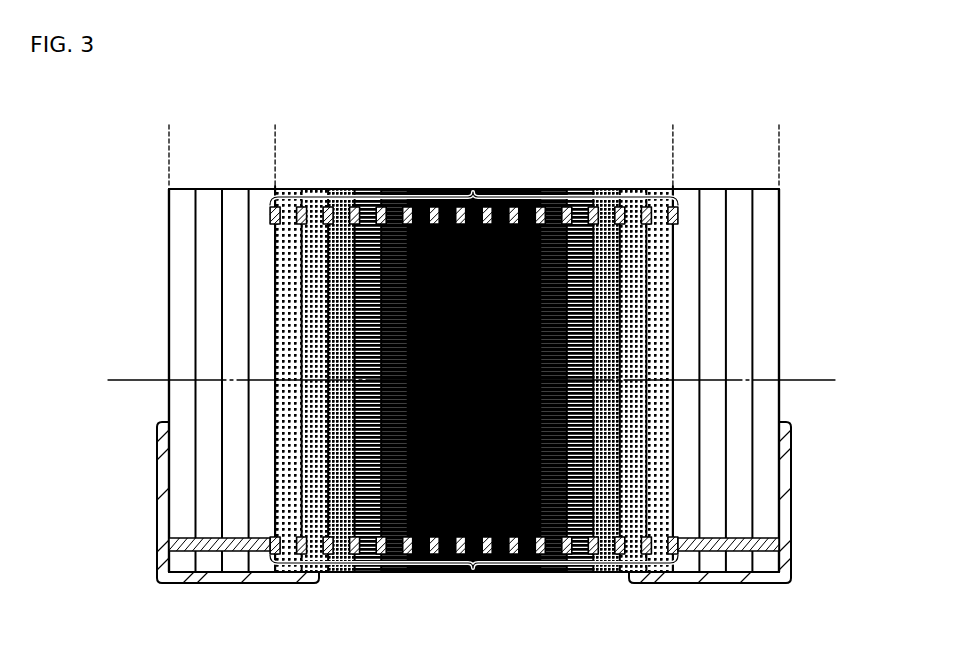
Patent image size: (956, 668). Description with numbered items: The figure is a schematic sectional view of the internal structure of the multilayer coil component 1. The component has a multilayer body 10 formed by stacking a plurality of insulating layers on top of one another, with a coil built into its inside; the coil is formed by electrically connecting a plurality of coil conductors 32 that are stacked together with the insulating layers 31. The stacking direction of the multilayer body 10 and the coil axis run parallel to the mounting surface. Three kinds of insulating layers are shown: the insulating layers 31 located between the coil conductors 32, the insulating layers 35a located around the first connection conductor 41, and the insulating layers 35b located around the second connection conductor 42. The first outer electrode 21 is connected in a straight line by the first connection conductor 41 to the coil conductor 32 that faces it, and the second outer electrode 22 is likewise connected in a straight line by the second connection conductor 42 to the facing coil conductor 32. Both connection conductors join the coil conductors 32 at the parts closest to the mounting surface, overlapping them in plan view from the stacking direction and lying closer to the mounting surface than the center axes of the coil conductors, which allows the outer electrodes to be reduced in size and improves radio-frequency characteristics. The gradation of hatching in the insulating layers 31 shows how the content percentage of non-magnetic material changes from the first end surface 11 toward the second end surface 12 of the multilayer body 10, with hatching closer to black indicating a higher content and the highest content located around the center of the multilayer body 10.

The multilayer coil component 1 is at (120, 153).
The multilayer body 10 is at (794, 204).
The first end surface 11 is at (169, 322).
The second end surface 12 is at (779, 322).
The first outer electrode 21 is at (158, 510).
The second outer electrode 22 is at (789, 510).
The insulating layers 31 is at (673, 121).
The coil conductors 32 is at (473, 195).
The insulating layers 35a is at (275, 121).
The insulating layers 35b is at (779, 121).
The first connection conductor 41 is at (213, 546).
The second connection conductor 42 is at (737, 546).